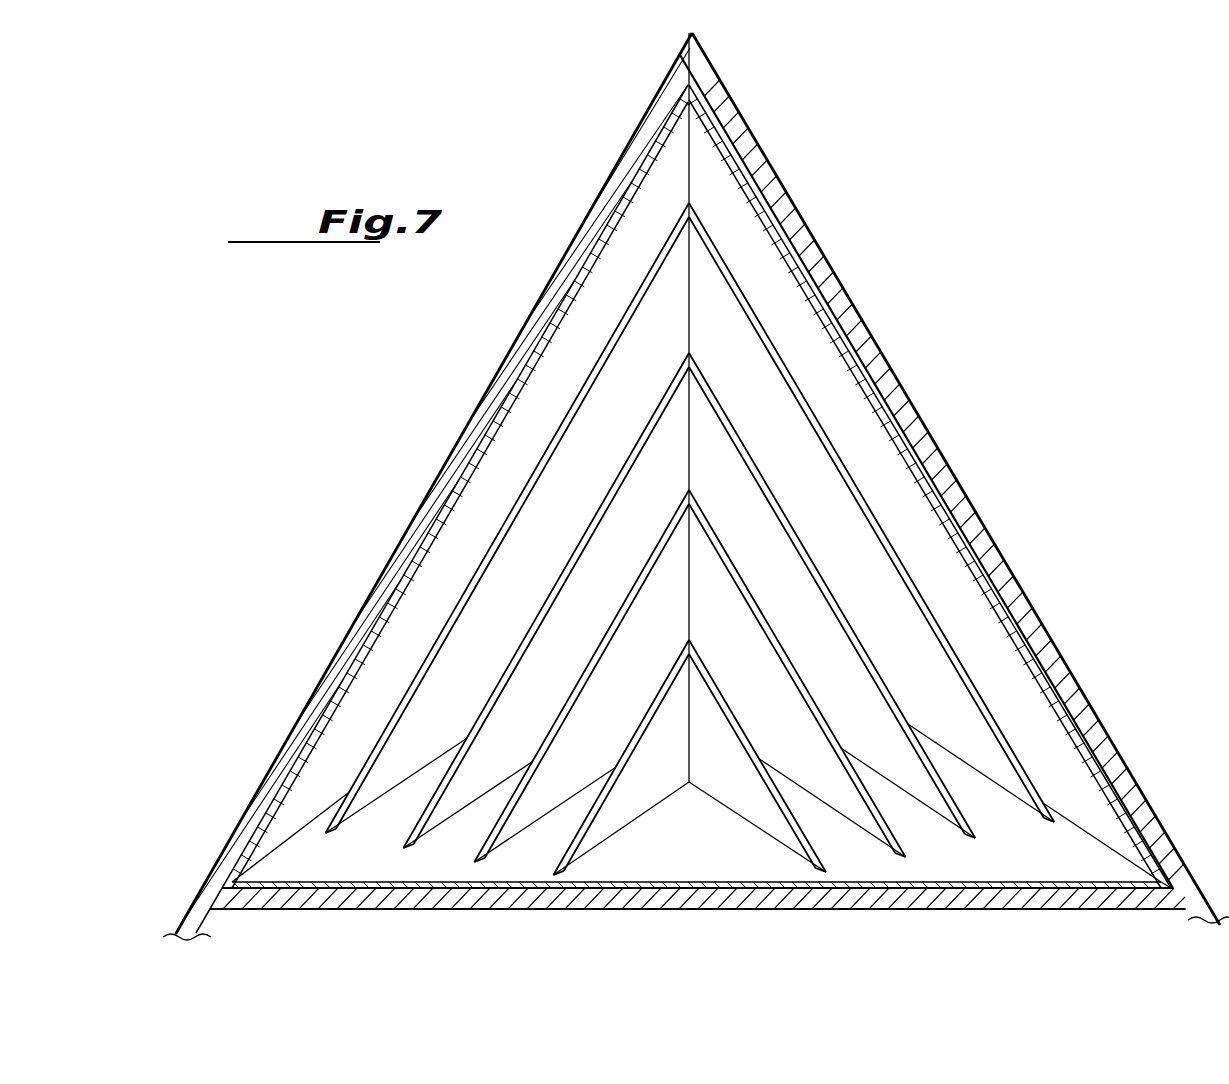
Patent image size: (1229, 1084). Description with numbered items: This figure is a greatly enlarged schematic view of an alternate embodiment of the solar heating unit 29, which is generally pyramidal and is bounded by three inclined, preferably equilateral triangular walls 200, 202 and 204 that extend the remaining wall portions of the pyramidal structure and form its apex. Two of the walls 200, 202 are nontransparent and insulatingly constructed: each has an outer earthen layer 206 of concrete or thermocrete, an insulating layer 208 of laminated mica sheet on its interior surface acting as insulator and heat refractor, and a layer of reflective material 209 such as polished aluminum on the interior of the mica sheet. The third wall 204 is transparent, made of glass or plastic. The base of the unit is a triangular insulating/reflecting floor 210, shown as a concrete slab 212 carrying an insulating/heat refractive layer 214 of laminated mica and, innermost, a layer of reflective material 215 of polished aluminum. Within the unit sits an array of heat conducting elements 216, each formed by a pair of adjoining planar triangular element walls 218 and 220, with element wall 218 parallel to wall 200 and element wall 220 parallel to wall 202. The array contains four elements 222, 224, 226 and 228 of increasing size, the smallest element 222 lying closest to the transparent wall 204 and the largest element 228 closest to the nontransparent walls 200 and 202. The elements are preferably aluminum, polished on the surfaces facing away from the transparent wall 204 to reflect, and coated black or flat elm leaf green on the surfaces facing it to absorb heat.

The solar heating unit 29 is at (843, 224).
The nontransparent wall 200 is at (546, 328).
The nontransparent wall 202 is at (868, 322).
The transparent wall 204 is at (1032, 750).
The outer earthen layer 206 is at (495, 374).
The insulating layer 208 is at (420, 535).
The layer of reflective material 209 is at (372, 640).
The insulating/reflecting floor 210 is at (1180, 897).
The concrete slab 212 is at (263, 897).
The insulating/heat refractive layer 214 is at (1112, 878).
The layer of reflective material 215 is at (1047, 880).
The array of heat conducting elements 216 is at (896, 629).
The element wall 218 is at (650, 766).
The element wall 220 is at (735, 768).
The smallest heat conducting element 222 is at (737, 717).
The heat conducting element 224 is at (798, 668).
The heat conducting element 226 is at (838, 593).
The largest heat conducting element 228 is at (860, 490).